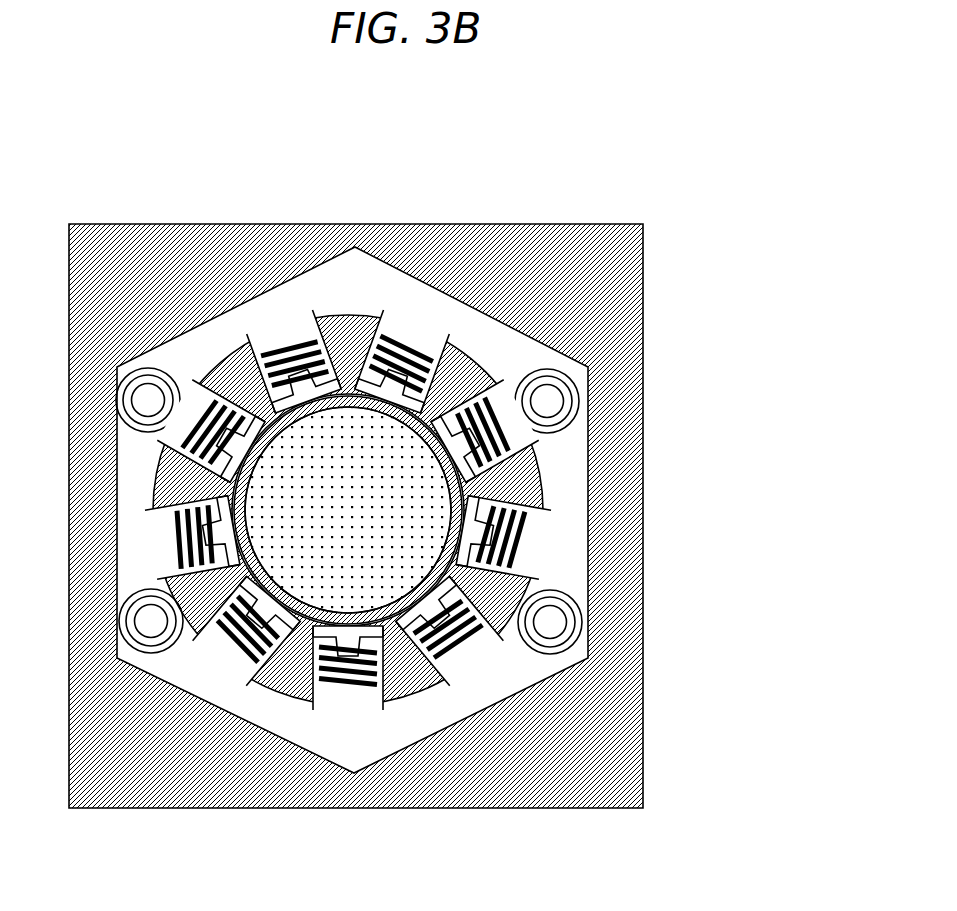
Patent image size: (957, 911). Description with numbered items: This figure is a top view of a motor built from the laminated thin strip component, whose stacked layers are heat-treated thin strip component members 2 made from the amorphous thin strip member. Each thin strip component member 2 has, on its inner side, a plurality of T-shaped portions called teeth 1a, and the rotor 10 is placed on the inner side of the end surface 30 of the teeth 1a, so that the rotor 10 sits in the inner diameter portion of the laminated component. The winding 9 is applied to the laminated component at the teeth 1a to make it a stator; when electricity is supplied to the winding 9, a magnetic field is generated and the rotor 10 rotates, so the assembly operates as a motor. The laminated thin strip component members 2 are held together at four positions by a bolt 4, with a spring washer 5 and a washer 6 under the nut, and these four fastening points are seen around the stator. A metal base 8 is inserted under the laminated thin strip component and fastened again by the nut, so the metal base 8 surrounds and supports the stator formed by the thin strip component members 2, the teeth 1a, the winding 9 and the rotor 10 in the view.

The teeth 1a is at (397, 330).
The thin strip component member 2 is at (552, 535).
The bolt 4 is at (550, 398).
The spring washer 5 is at (568, 400).
The washer 6 is at (573, 415).
The metal base 8 is at (552, 737).
The winding 9 is at (273, 347).
The rotor 10 is at (367, 478).
The end surface 30 is at (413, 347).